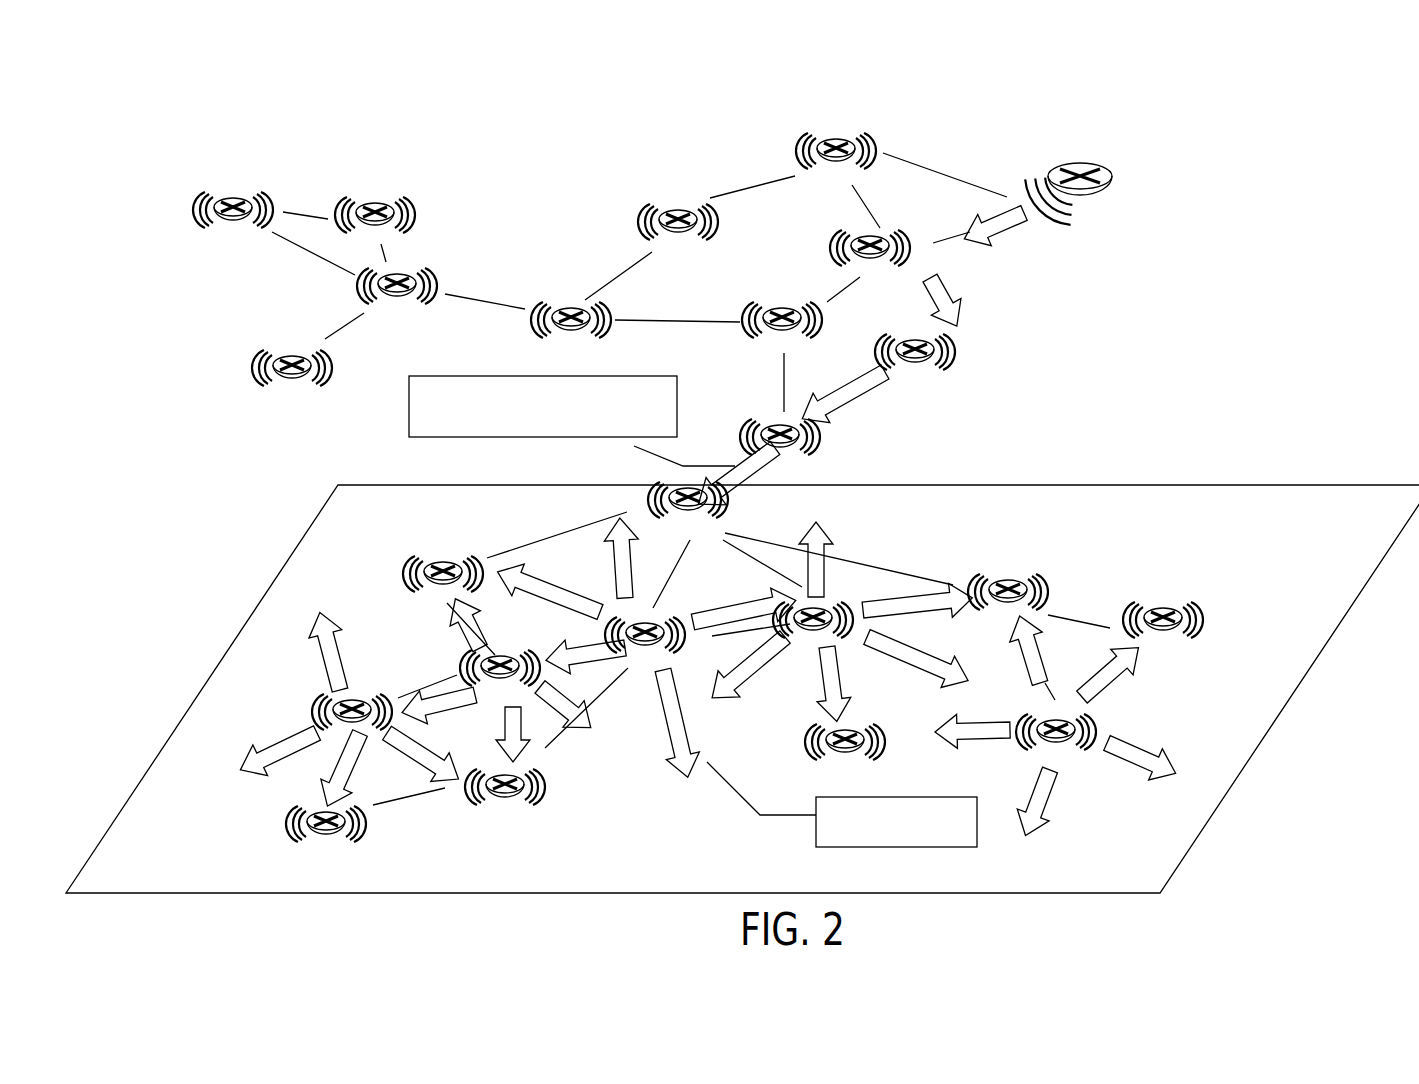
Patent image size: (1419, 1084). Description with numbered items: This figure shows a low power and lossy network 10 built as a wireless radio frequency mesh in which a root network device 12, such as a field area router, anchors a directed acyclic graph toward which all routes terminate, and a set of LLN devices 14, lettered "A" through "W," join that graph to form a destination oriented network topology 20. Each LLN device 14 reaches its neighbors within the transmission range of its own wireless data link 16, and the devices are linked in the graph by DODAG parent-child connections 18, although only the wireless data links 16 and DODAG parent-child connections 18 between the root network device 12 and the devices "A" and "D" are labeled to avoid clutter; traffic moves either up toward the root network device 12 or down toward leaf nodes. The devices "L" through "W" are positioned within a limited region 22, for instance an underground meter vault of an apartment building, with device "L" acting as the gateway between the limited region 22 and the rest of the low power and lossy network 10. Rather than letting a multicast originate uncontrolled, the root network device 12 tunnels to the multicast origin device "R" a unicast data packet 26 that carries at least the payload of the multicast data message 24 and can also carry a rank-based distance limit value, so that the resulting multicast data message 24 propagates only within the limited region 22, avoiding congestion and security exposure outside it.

The low power and lossy network 10 is at (1200, 156).
The root network device 12 is at (1092, 302).
The LLN devices 14 is at (825, 170).
The wireless data link 16 is at (1022, 192).
The DODAG parent-child connections 18 is at (747, 186).
The network topology 20 is at (650, 133).
The limited region 22 is at (1150, 485).
The multicast data message 24 is at (938, 847).
The unicast data packet 26 is at (677, 408).